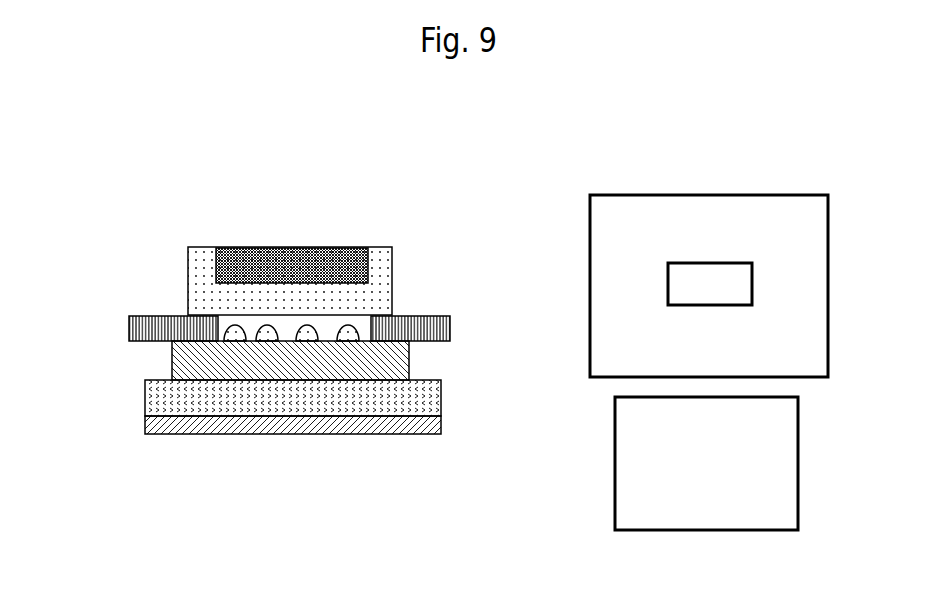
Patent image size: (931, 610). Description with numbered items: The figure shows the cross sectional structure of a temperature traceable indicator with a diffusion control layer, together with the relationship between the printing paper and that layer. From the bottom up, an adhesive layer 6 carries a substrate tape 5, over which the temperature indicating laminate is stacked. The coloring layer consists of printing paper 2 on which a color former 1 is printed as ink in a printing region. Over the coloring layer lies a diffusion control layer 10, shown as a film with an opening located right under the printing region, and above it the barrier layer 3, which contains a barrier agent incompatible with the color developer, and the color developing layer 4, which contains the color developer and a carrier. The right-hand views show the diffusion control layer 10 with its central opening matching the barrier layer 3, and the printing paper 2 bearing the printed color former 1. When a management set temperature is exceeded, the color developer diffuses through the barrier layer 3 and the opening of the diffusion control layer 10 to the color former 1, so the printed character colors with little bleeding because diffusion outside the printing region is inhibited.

The color former 1 is at (266, 341).
The printing paper 2 is at (635, 473).
The barrier layer 3 is at (188, 290).
The color developing layer 4 is at (372, 258).
The substrate tape 5 is at (160, 398).
The adhesive layer 6 is at (415, 432).
The diffusion control layer 10 is at (610, 273).